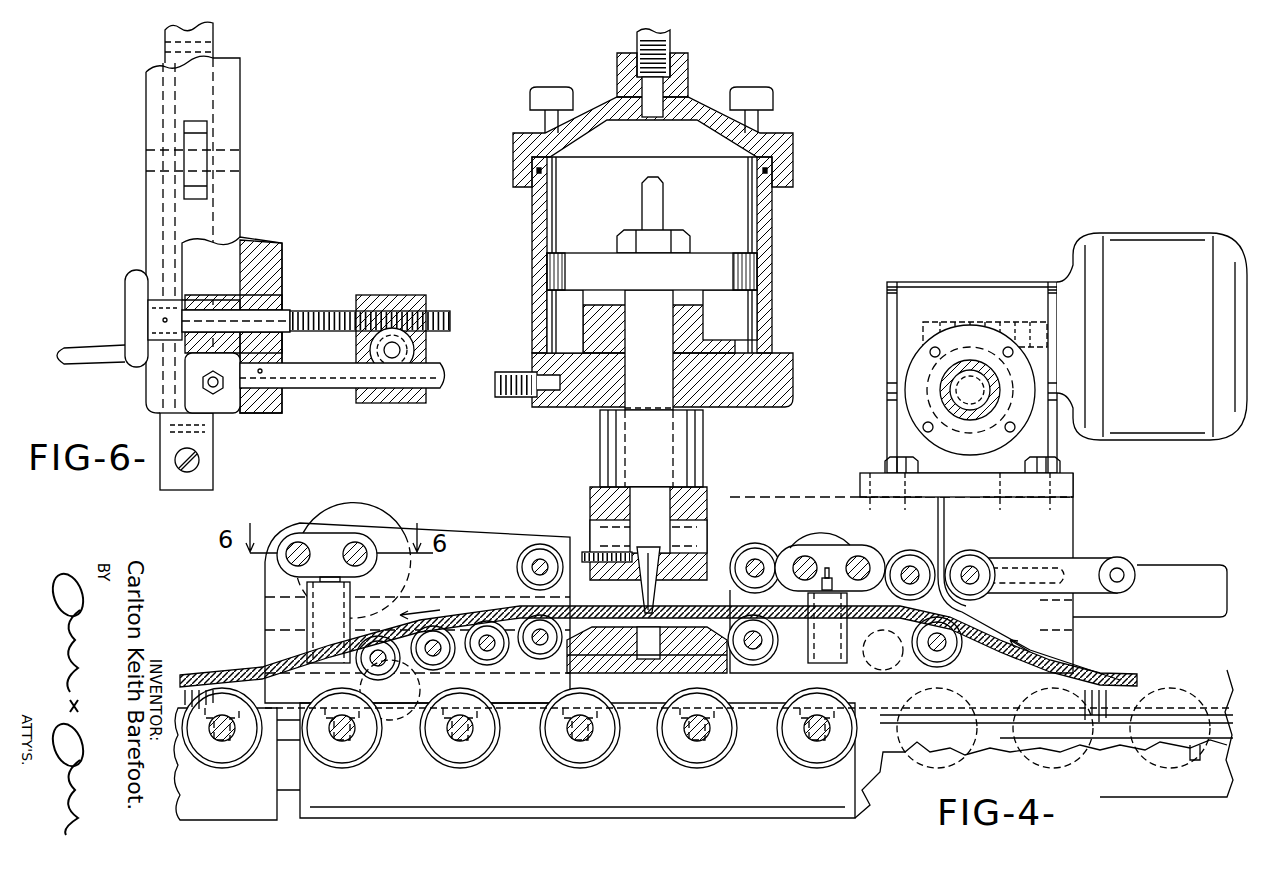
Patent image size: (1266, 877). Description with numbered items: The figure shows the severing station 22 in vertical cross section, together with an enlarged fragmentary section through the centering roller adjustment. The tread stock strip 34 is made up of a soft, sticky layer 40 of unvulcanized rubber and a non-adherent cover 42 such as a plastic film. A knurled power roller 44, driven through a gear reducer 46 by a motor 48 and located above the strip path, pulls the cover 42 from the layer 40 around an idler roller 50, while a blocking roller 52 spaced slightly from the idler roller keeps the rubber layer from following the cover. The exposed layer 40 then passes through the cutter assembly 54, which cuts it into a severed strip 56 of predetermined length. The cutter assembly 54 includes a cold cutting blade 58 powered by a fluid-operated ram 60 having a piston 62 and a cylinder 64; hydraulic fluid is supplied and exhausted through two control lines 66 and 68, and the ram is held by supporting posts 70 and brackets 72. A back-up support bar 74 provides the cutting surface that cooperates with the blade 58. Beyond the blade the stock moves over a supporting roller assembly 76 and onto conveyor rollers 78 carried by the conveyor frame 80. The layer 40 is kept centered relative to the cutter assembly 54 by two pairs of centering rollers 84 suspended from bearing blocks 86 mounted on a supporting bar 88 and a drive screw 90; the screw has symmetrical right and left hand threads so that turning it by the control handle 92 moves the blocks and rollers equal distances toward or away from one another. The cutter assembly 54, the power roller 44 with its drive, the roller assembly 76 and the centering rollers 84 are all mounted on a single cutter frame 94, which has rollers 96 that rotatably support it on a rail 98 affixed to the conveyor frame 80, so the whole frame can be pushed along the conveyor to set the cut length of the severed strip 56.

In FIG. 4, the severing station 22 is at (641, 231).
In FIG. 4, the tread stock strip 34 is at (1115, 666).
In FIG. 4, the layer 40 is at (1020, 655).
In FIG. 4, the cover 42 is at (1075, 665).
In FIG. 4, the knurled power roller 44 is at (940, 385).
In FIG. 4, the gear reducer 46 is at (997, 290).
In FIG. 4, the motor 48 is at (1143, 240).
In FIG. 4, the idler roller 50 is at (975, 562).
In FIG. 4, the blocking roller 52 is at (924, 560).
In FIG. 4, the cutter assembly 54 is at (668, 511).
In FIG. 4, the severed strip 56 is at (256, 660).
In FIG. 4, the cold cutting blade 58 is at (644, 597).
In FIG. 4, the fluid-operated ram 60 is at (775, 240).
In FIG. 4, the piston 62 is at (738, 252).
In FIG. 4, the cylinder 64 is at (757, 206).
In FIG. 4, the control line 66 is at (670, 35).
In FIG. 4, the control line 68 is at (505, 400).
In FIG. 4, the supporting post 70 is at (615, 432).
In FIG. 4, the bracket 72 is at (712, 590).
In FIG. 4, the back-up support bar 74 is at (632, 675).
In FIG. 4, the supporting roller assembly 76 is at (519, 667).
In FIG. 4, the conveyor rollers 78 is at (225, 772).
In FIG. 4, the conveyor frame 80 is at (532, 794).
In FIG. 6, the centering rollers 84 is at (368, 352).
In FIG. 6, the bearing blocks 86 is at (402, 300).
In FIG. 6, the supporting bar 88 is at (300, 397).
In FIG. 6, the drive screw 90 is at (340, 310).
In FIG. 6, the control handle 92 is at (124, 294).
In FIG. 6, the cutter frame 94 is at (256, 416).
In FIG. 4, the cutter frame 94 is at (254, 632).
In FIG. 6, the rollers 96 is at (207, 130).
In FIG. 4, the rollers 96 is at (893, 675).
In FIG. 6, the rail 98 is at (215, 38).
In FIG. 4, the rail 98 is at (188, 675).